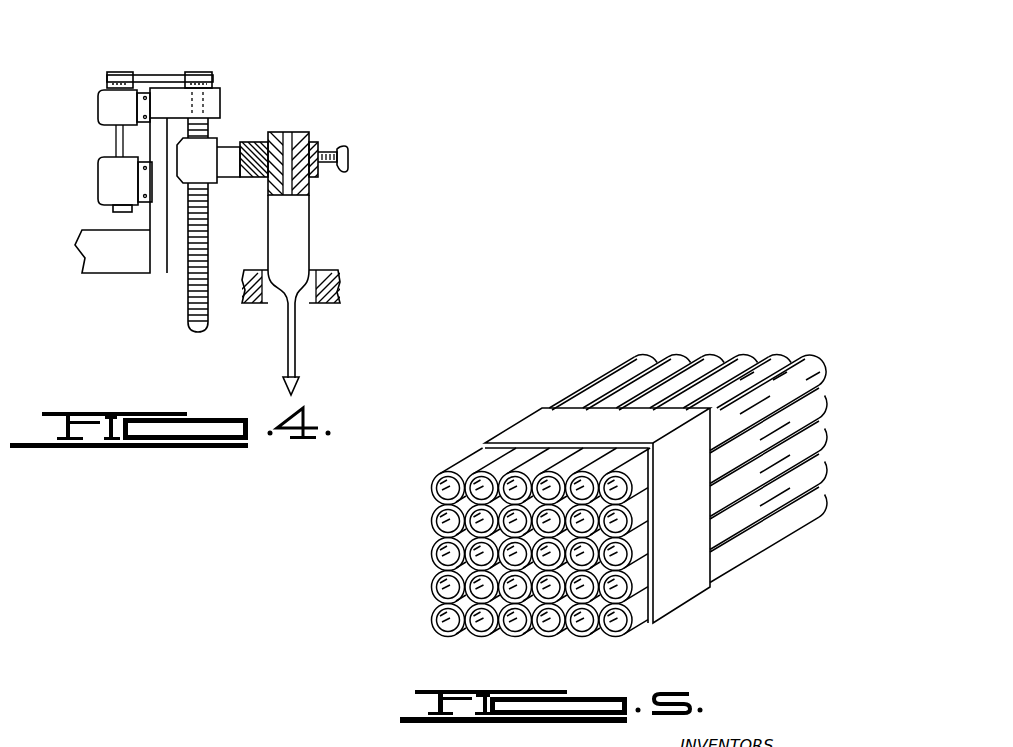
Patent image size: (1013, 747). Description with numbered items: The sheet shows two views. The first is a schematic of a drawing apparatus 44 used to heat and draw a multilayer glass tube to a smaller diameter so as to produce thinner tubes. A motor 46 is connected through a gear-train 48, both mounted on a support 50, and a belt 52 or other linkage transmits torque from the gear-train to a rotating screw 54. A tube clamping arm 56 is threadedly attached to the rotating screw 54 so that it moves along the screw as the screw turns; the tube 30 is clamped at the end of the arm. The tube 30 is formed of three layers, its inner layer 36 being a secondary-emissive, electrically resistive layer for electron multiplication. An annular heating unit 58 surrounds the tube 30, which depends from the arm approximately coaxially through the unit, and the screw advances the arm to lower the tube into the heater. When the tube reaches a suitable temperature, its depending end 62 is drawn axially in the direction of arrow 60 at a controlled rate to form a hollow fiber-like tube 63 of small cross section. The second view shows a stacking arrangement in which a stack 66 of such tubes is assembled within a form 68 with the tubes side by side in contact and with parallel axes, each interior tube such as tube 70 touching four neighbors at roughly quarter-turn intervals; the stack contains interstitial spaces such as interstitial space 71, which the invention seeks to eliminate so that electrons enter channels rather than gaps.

In FIG. 4, the tube 30 is at (311, 227).
In FIG. 4, the inner layer 36 is at (288, 133).
In FIG. 4, the drawing apparatus 44 is at (280, 86).
In FIG. 4, the motor 46 is at (115, 180).
In FIG. 4, the gear-train 48 is at (107, 107).
In FIG. 4, the support 50 is at (140, 268).
In FIG. 4, the belt 52 is at (160, 74).
In FIG. 4, the rotating screw 54 is at (195, 312).
In FIG. 4, the tube clamping arm 56 is at (238, 160).
In FIG. 4, the annular heating unit 58 is at (336, 270).
In FIG. 4, the arrow 60 is at (293, 385).
In FIG. 4, the depending end 62 is at (283, 313).
In FIG. 4, the hollow fiber-like tube 63 is at (295, 345).
In FIG. 5, the stack 66 is at (413, 522).
In FIG. 5, the form 68 is at (682, 596).
In FIG. 5, the tube 70 is at (587, 600).
In FIG. 5, the interstitial space 71 is at (530, 603).